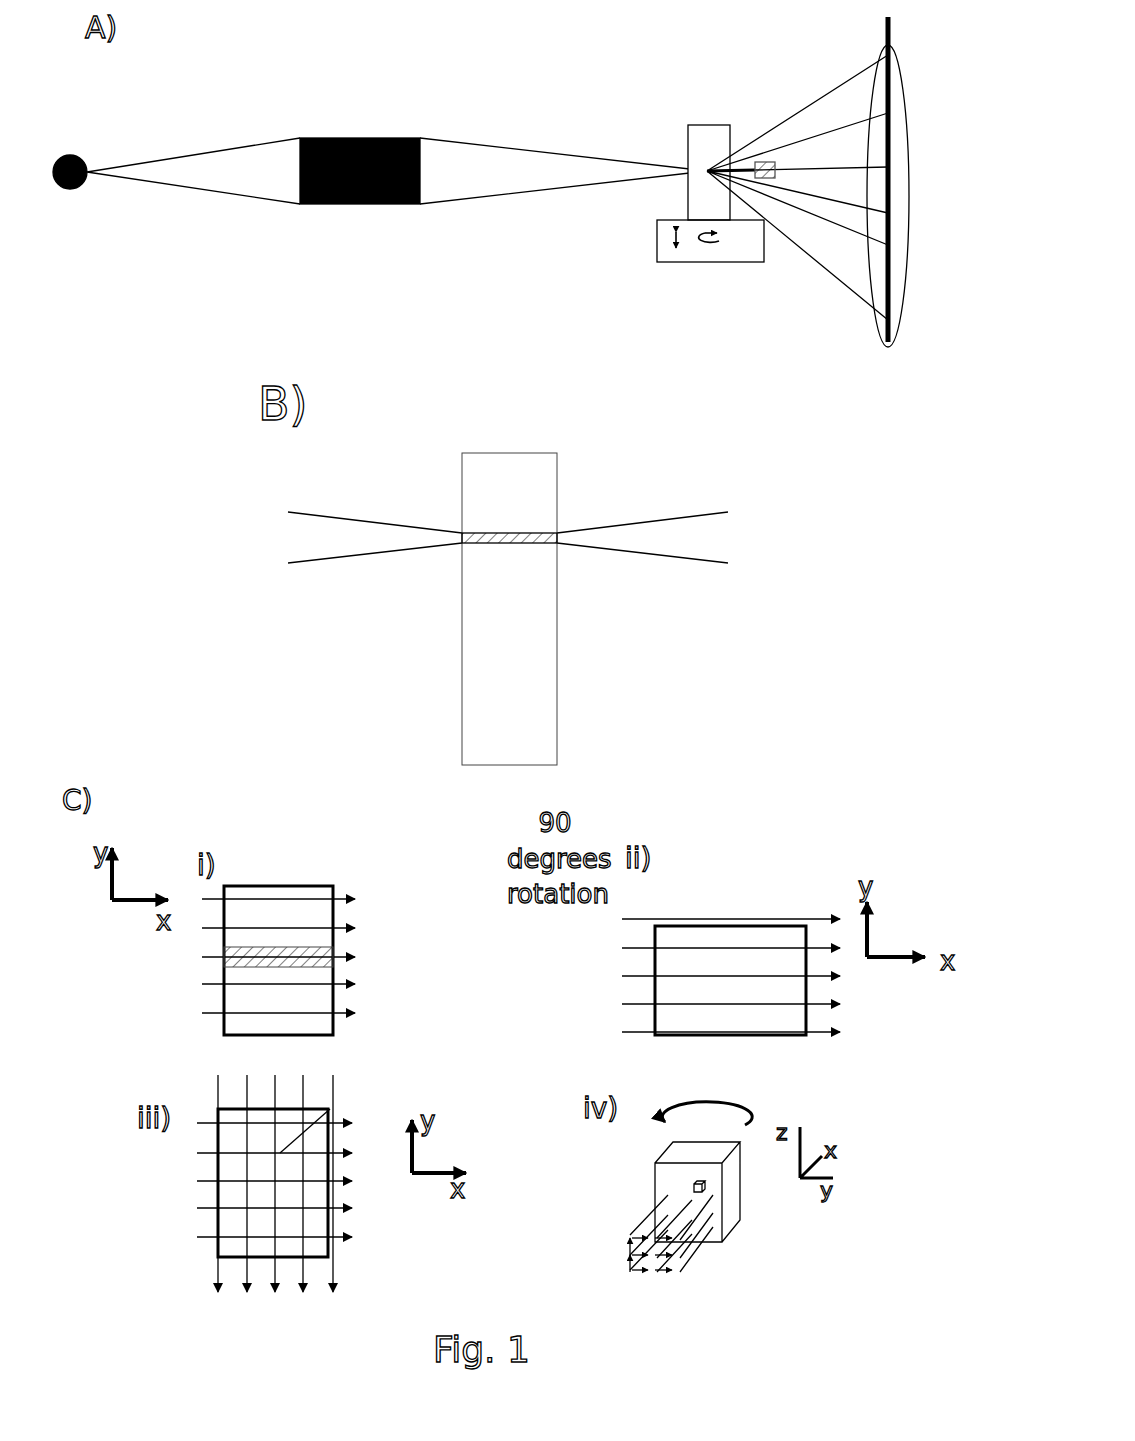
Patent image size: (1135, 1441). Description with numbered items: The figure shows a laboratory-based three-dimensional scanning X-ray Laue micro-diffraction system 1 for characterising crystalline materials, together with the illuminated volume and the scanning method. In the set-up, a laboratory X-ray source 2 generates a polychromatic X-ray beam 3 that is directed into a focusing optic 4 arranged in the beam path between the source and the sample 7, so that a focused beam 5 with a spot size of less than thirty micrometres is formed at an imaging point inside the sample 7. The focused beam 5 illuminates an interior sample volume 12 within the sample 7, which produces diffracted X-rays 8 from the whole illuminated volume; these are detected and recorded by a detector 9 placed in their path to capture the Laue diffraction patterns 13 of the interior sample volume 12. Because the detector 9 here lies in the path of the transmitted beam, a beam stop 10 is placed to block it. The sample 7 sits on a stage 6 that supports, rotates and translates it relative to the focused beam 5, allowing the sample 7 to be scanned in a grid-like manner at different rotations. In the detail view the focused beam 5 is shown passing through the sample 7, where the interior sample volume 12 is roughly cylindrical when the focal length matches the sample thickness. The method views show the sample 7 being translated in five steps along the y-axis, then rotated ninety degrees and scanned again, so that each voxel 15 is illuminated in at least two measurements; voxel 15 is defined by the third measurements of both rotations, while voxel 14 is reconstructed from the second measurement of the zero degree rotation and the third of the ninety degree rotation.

The laboratory-based 3D scanning X-ray Laue micro-diffraction system 1 is at (216, 44).
The laboratory X-ray source 2 is at (77, 155).
The polychromatic X-ray beam 3 is at (238, 146).
The focusing optic 4 is at (370, 138).
The focused beam 5 is at (470, 141).
The stage 6 is at (720, 262).
The sample 7 is at (727, 125).
The diffracted X-rays 8 is at (813, 100).
The detector 9 is at (890, 28).
The beam stop 10 is at (780, 170).
The interior sample volume 12 is at (533, 535).
The Laue diffraction patterns 13 is at (873, 325).
The voxel 14 is at (280, 1153).
The voxel 15 is at (275, 1180).